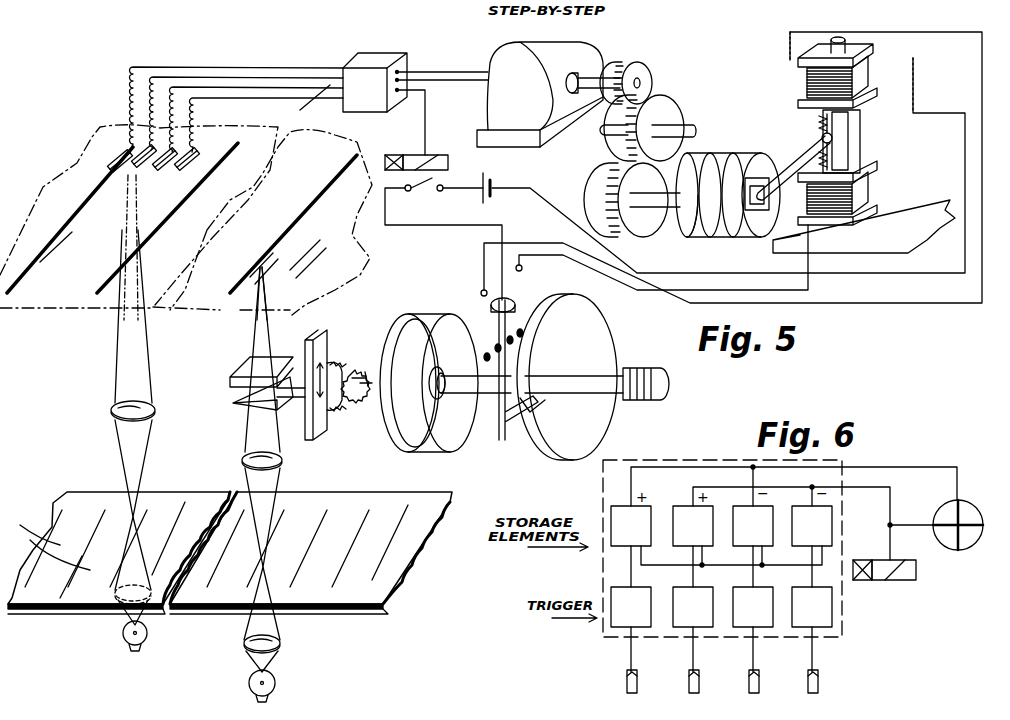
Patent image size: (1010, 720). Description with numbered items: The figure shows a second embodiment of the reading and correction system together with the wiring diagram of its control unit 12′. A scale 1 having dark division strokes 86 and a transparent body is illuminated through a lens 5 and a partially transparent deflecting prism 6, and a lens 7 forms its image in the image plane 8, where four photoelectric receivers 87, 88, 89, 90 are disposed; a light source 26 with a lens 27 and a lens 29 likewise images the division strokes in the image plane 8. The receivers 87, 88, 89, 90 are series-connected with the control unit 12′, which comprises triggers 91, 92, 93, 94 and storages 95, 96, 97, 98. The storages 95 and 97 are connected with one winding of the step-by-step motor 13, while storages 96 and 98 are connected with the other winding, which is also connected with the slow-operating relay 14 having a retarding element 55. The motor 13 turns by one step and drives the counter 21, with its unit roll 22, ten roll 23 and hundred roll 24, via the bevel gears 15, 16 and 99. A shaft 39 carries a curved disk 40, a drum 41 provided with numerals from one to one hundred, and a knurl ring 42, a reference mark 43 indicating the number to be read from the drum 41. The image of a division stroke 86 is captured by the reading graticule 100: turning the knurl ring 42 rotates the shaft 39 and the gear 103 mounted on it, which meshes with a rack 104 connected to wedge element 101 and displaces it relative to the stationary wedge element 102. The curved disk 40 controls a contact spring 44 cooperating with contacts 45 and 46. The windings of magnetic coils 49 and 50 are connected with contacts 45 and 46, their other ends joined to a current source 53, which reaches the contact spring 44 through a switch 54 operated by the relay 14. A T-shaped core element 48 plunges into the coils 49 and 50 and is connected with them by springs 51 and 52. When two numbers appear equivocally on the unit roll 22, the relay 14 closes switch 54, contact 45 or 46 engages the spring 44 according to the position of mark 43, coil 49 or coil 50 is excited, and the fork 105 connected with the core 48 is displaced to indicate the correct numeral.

In FIG. 5, the scale 1 is at (48, 607).
In FIG. 5, the lens 5 is at (118, 600).
In FIG. 5, the partially transparent deflecting prism 6 is at (125, 640).
In FIG. 5, the lens 7 is at (112, 410).
In FIG. 5, the image plane 8 is at (66, 300).
In FIG. 5, the control unit 12' is at (415, 92).
In FIG. 6, the control unit 12' is at (853, 645).
In FIG. 5, the step-by-step motor 13 is at (510, 65).
In FIG. 6, the step-by-step motor 13 is at (962, 545).
In FIG. 5, the relay 14 is at (437, 157).
In FIG. 6, the relay 14 is at (904, 580).
In FIG. 5, the gear 15 is at (652, 72).
In FIG. 5, the gear 16 is at (672, 105).
In FIG. 5, the counter 21 is at (682, 230).
In FIG. 5, the unit roll 22 is at (745, 158).
In FIG. 5, the ten roll 23 is at (718, 160).
In FIG. 5, the hundred roll 24 is at (692, 160).
In FIG. 5, the light source 26 is at (275, 683).
In FIG. 5, the lens 27 is at (278, 642).
In FIG. 5, the lens 29 is at (243, 462).
In FIG. 5, the shaft 39 is at (490, 395).
In FIG. 5, the curved disk 40 is at (570, 450).
In FIG. 5, the drum 41 is at (402, 445).
In FIG. 5, the knurl ring 42 is at (660, 400).
In FIG. 5, the reference mark 43 is at (365, 372).
In FIG. 5, the contact spring 44 is at (515, 440).
In FIG. 5, the contact 45 is at (483, 350).
In FIG. 5, the contact 46 is at (520, 328).
In FIG. 5, the T-shaped core element 48 is at (850, 143).
In FIG. 5, the magnetic coil 49 is at (880, 192).
In FIG. 5, the magnetic coil 50 is at (870, 82).
In FIG. 5, the spring 51 is at (805, 155).
In FIG. 5, the spring 52 is at (818, 122).
In FIG. 5, the current source 53 is at (492, 195).
In FIG. 5, the switch 54 is at (432, 190).
In FIG. 5, the retarding element 55 is at (400, 147).
In FIG. 6, the retarding element 55 is at (862, 580).
In FIG. 5, the dark division strokes 86 is at (55, 555).
In FIG. 5, the photoelectric receiver 87 is at (110, 158).
In FIG. 6, the photoelectric receiver 87 is at (626, 685).
In FIG. 5, the photoelectric receiver 88 is at (140, 170).
In FIG. 6, the photoelectric receiver 88 is at (688, 685).
In FIG. 5, the photoelectric receiver 89 is at (168, 168).
In FIG. 6, the photoelectric receiver 89 is at (748, 685).
In FIG. 5, the photoelectric receiver 90 is at (200, 160).
In FIG. 6, the photoelectric receiver 90 is at (807, 685).
In FIG. 6, the trigger 91 is at (631, 586).
In FIG. 6, the trigger 92 is at (693, 586).
In FIG. 6, the trigger 93 is at (753, 586).
In FIG. 6, the trigger 94 is at (812, 586).
In FIG. 6, the storage 95 is at (631, 526).
In FIG. 6, the storage 96 is at (693, 526).
In FIG. 6, the storage 97 is at (753, 526).
In FIG. 6, the storage 98 is at (812, 526).
In FIG. 5, the bevel gear 99 is at (630, 183).
In FIG. 5, the reading graticule 100 is at (255, 245).
In FIG. 5, the wedge element 101 is at (245, 403).
In FIG. 5, the stationary wedge element 102 is at (248, 372).
In FIG. 5, the gear 103 is at (343, 335).
In FIG. 5, the rack 104 is at (338, 412).
In FIG. 5, the fork 105 is at (748, 232).